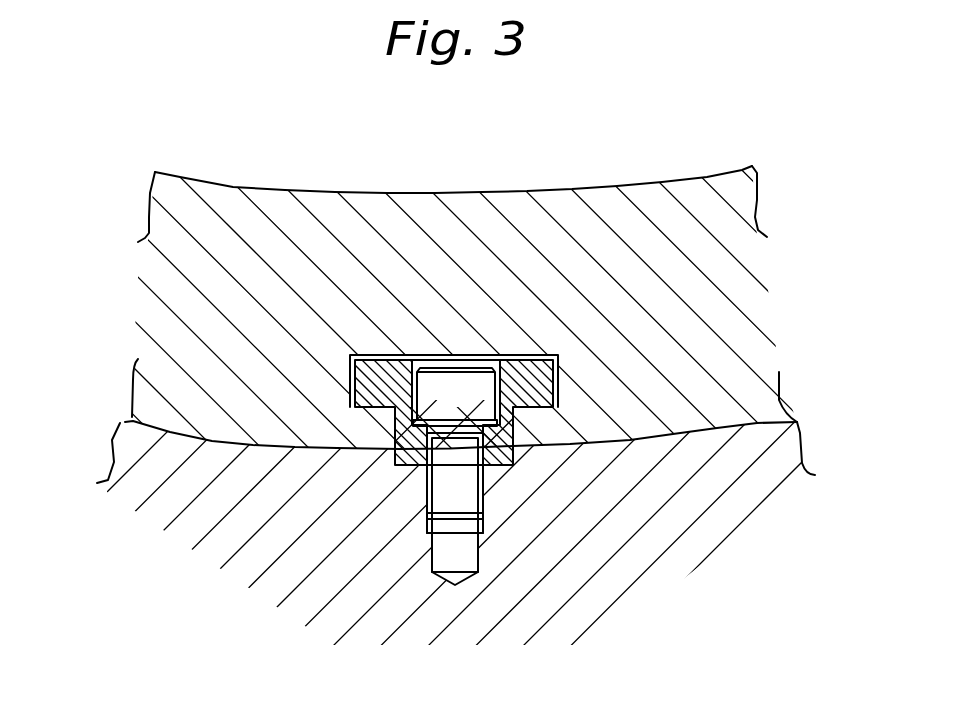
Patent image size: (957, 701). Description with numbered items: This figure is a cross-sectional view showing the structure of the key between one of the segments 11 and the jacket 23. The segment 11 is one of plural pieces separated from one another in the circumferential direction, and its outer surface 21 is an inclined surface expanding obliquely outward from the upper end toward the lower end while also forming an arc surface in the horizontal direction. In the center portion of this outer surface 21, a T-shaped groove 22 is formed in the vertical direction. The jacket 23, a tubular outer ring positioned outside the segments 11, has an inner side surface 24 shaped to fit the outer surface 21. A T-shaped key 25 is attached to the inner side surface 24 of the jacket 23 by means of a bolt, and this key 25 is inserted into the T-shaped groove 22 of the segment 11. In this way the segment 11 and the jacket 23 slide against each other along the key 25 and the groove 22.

The segment 11 is at (700, 247).
The outer surface 21 is at (798, 430).
The T-shaped groove 22 is at (373, 405).
The jacket 23 is at (737, 505).
The inner side surface 24 is at (175, 433).
The T-shaped key 25 is at (533, 368).